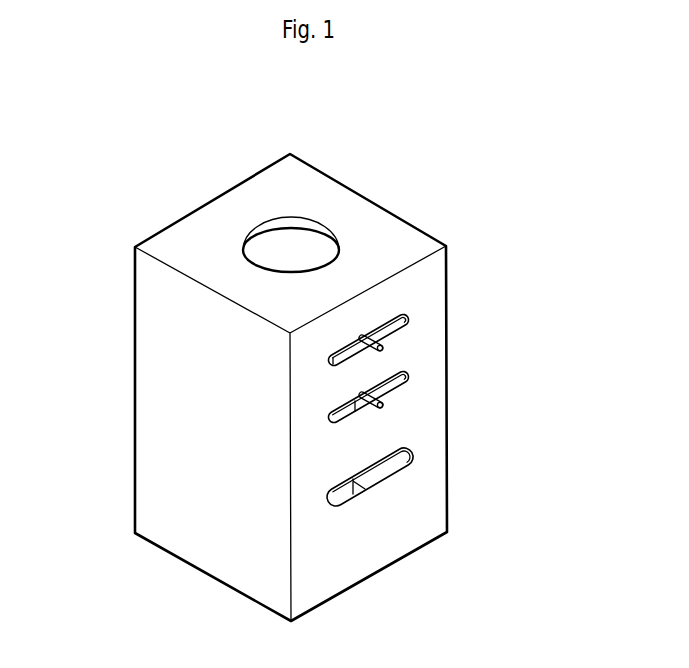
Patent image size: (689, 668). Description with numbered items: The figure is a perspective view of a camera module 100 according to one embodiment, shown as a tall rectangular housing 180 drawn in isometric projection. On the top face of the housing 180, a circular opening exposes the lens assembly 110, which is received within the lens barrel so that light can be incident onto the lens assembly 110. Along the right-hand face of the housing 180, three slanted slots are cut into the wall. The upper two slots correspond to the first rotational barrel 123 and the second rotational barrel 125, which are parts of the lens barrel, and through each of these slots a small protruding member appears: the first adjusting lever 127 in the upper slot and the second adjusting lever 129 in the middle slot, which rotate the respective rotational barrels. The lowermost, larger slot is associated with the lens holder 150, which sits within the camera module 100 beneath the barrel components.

The camera module 100 is at (593, 89).
The lens assembly 110 is at (290, 247).
The housing 180 is at (398, 233).
The first rotational barrel 123 is at (333, 366).
The second rotational barrel 125 is at (333, 424).
The first adjusting lever 127 is at (384, 350).
The second adjusting lever 129 is at (384, 406).
The lens holder 150 is at (345, 492).